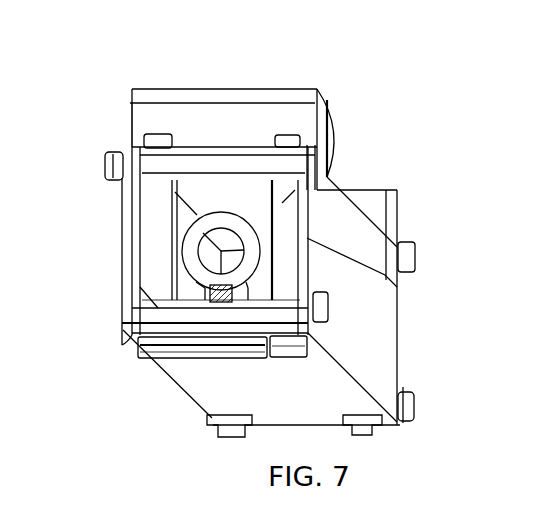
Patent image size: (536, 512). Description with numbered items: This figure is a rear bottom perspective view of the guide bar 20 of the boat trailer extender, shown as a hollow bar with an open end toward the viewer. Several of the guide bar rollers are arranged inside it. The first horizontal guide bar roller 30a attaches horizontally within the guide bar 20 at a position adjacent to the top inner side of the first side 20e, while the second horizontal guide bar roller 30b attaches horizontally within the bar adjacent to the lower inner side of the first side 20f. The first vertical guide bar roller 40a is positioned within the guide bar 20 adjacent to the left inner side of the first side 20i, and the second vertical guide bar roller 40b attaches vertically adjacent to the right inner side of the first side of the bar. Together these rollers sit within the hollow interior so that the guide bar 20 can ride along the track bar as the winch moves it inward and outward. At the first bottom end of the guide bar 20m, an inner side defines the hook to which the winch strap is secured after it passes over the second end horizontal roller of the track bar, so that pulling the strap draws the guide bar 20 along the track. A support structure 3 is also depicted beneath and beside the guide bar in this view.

The guide bar 20 is at (368, 121).
The first horizontal guide bar roller 30a is at (147, 136).
The second vertical guide bar roller 40b is at (333, 157).
The first side of the guide bar 20e is at (197, 157).
The first vertical guide bar roller 40a is at (178, 200).
The first side of the guide bar 20i is at (128, 252).
The second horizontal guide bar roller 30b is at (150, 287).
The first side of the guide bar 20f is at (125, 332).
The first bottom end of the guide bar 20m is at (153, 363).
The support frame 3 is at (397, 289).